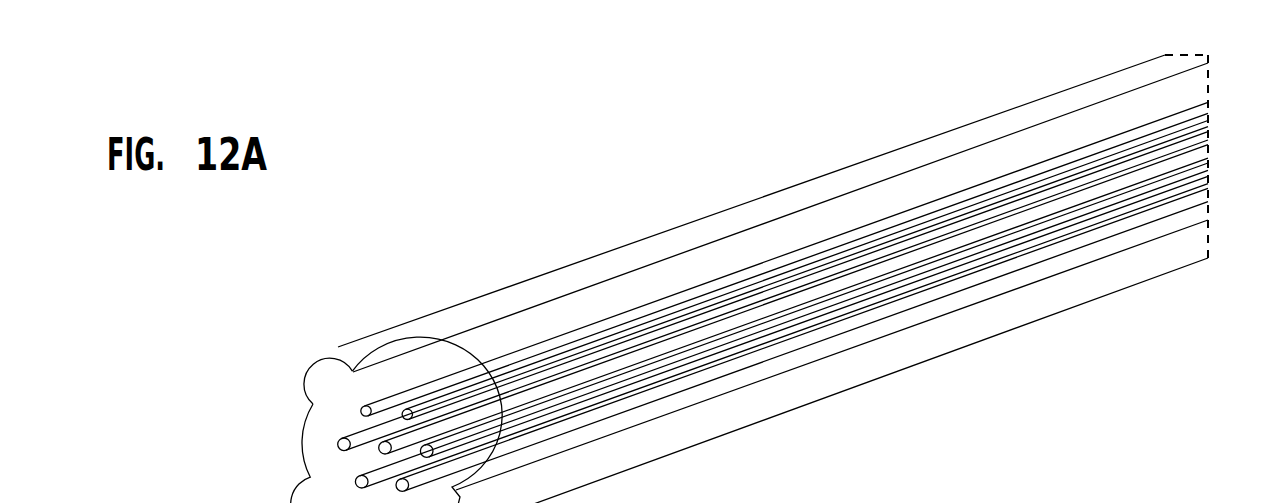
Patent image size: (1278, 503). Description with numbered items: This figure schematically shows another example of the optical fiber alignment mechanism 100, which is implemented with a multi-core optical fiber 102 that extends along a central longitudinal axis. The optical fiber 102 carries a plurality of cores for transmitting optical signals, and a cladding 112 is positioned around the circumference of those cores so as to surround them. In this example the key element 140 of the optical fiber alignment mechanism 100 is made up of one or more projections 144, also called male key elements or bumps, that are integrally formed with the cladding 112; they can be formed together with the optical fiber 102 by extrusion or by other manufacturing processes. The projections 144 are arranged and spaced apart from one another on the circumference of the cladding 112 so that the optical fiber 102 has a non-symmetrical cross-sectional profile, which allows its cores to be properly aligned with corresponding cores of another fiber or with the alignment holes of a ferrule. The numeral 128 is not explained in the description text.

The optical fiber alignment mechanism 100 is at (236, 249).
The optical fiber 102 is at (959, 99).
The cladding 112 is at (860, 203).
The small conductors 128 is at (407, 409).
The key element 140 is at (321, 333).
The projections 144 is at (332, 383).